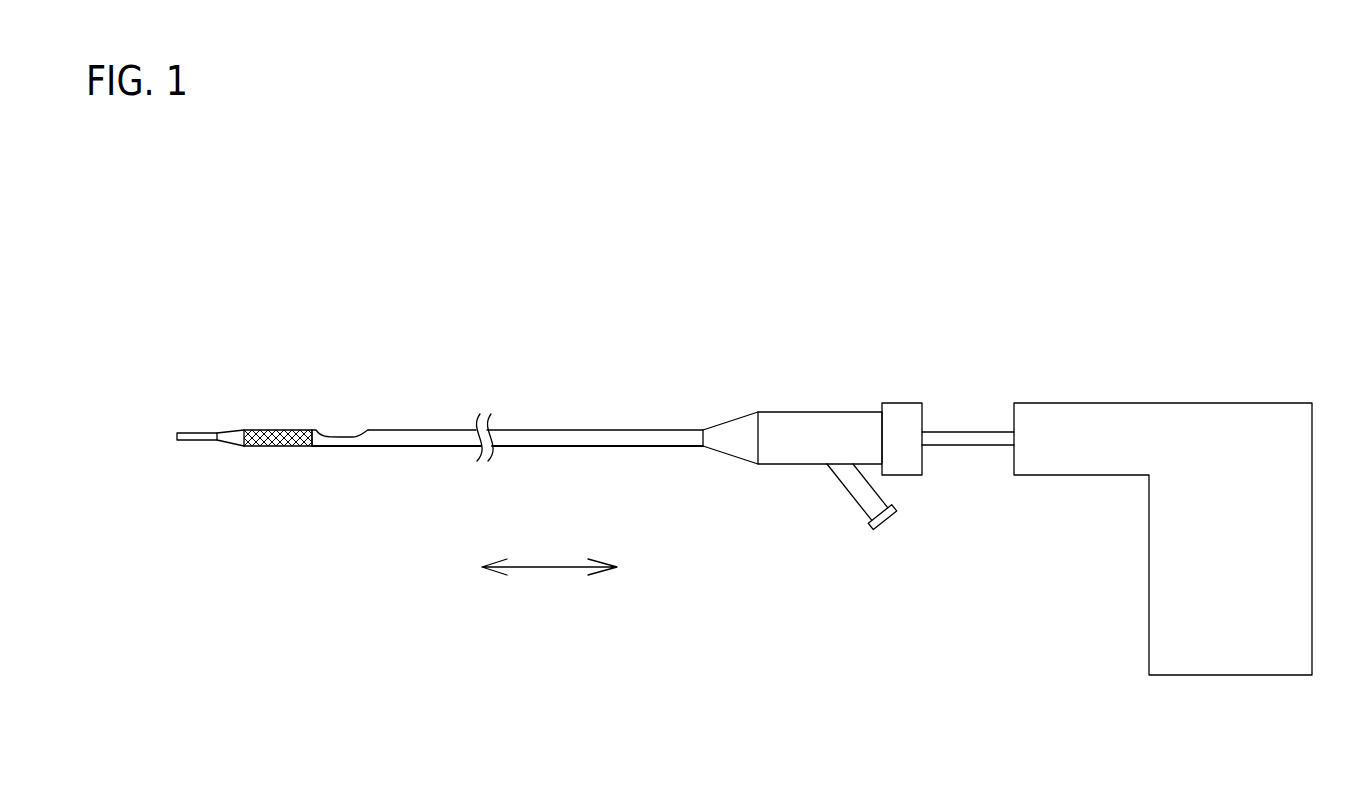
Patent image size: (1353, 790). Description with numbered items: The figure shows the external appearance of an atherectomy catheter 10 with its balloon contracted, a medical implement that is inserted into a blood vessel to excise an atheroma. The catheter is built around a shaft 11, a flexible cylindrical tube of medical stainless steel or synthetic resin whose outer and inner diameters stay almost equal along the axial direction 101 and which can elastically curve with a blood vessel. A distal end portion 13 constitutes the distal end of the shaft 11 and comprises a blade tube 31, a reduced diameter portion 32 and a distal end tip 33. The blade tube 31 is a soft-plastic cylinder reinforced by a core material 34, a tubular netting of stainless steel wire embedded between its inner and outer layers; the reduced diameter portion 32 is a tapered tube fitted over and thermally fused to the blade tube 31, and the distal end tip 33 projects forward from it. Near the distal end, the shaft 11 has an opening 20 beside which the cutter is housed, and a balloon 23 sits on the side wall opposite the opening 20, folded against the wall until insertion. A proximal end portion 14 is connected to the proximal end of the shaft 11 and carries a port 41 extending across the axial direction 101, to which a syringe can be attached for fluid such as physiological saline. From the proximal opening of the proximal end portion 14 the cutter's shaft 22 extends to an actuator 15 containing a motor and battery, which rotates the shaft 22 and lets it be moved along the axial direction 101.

The atherectomy catheter 10 is at (478, 500).
The shaft 11 is at (582, 428).
The distal end portion 13 is at (267, 418).
The proximal end portion 14 is at (808, 412).
The actuator 15 is at (1143, 403).
The opening 20 is at (343, 432).
The shaft 22 is at (960, 432).
The balloon 23 is at (343, 447).
The blade tube 31 is at (299, 429).
The reduced diameter portion 32 is at (228, 432).
The distal end tip 33 is at (192, 433).
The core material 34 is at (270, 447).
The port 41 is at (887, 522).
The axial direction 101 is at (547, 567).